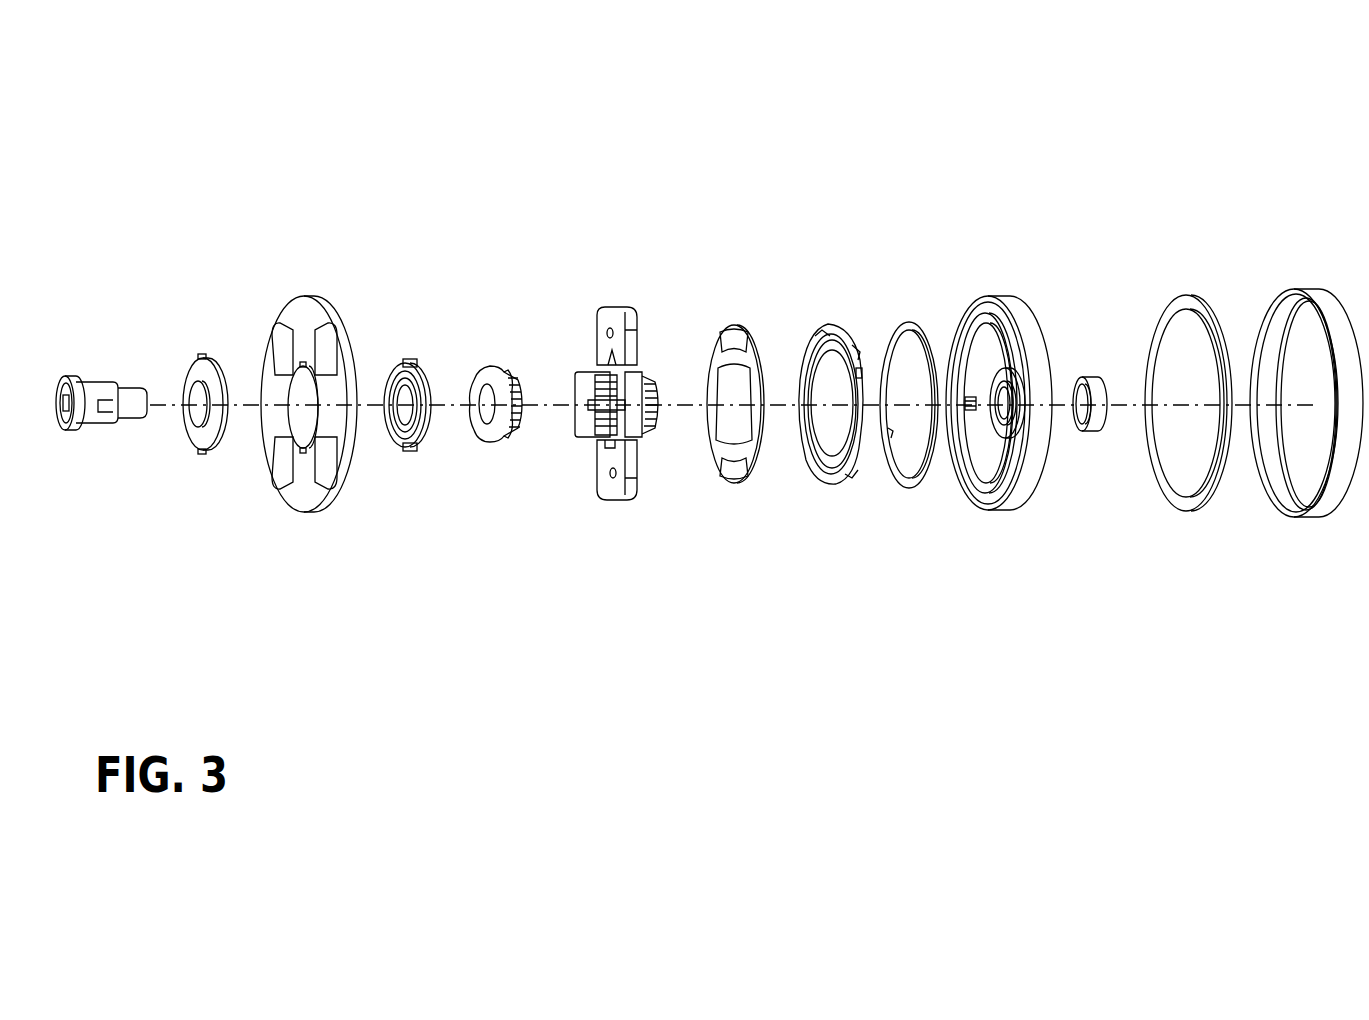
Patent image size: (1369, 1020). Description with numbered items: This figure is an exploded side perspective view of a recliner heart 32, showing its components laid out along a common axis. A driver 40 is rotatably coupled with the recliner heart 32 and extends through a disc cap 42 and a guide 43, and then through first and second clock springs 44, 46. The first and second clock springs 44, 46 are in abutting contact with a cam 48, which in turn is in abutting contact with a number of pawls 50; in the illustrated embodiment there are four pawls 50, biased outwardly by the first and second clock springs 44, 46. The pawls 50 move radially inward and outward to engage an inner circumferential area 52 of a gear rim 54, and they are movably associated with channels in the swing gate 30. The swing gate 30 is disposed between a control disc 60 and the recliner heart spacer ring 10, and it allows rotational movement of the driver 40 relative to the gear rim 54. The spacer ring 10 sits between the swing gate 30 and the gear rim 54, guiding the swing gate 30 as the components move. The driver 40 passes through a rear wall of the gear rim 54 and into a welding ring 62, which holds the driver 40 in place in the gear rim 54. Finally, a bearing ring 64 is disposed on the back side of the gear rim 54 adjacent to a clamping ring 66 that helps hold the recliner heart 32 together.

The recliner heart spacer ring 10 is at (904, 312).
The swing gate 30 is at (834, 490).
The recliner heart 32 is at (1013, 160).
The driver 40 is at (125, 433).
The disc cap 42 is at (197, 350).
The guide 43 is at (305, 515).
The first clock spring 44 is at (414, 357).
The second clock spring 46 is at (410, 452).
The cam 48 is at (488, 358).
The pawls 50 is at (605, 304).
The inner circumferential area 52 is at (972, 482).
The gear rim 54 is at (1006, 512).
The control disc 60 is at (738, 489).
The welding ring 62 is at (1081, 372).
The bearing ring 64 is at (1176, 516).
The clamping ring 66 is at (1297, 284).